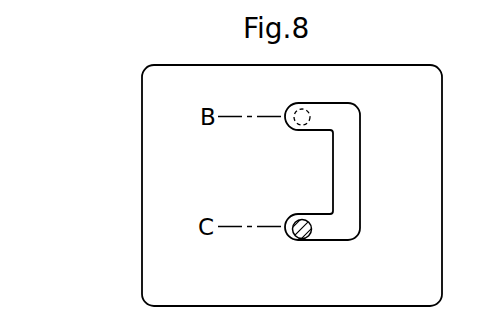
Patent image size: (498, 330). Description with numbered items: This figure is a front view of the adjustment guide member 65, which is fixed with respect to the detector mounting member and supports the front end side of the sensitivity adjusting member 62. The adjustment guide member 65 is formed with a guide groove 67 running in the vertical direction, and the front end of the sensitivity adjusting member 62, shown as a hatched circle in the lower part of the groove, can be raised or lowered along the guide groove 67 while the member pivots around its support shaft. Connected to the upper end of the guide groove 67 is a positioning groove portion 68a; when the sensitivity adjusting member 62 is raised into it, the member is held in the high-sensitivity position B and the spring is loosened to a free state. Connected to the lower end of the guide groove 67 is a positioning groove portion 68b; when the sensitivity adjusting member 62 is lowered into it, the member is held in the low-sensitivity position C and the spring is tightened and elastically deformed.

The adjustment guide member 65 is at (147, 170).
The guide groove 67 is at (360, 182).
The positioning groove portion 68a is at (287, 105).
The positioning groove portion 68b is at (285, 237).
The sensitivity adjusting member 62 is at (308, 235).